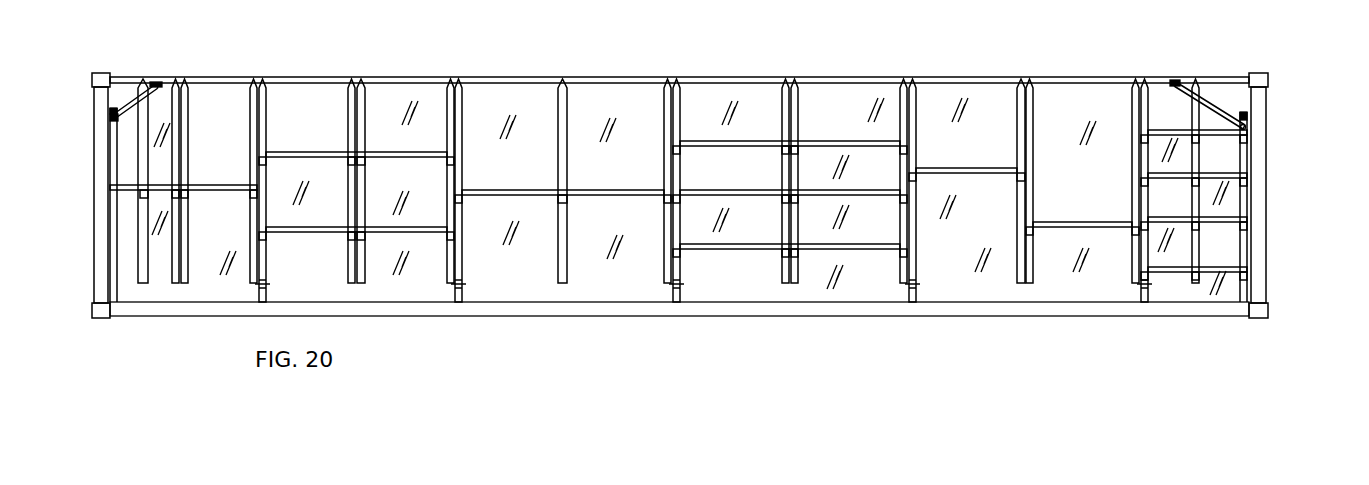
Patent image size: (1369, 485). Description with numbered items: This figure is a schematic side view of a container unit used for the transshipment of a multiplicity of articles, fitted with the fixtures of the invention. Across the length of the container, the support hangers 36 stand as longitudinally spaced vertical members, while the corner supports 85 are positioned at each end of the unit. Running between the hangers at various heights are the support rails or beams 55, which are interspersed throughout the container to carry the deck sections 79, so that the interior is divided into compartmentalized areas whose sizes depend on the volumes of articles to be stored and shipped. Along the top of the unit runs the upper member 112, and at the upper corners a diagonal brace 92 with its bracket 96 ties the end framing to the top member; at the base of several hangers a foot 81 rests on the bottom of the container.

The support hanger 36 is at (187, 152).
The support rail 55 is at (191, 190).
The deck section 79 is at (497, 190).
The foot 81 is at (267, 290).
The corner support 85 is at (112, 157).
The brace 92 is at (128, 98).
The bracket 96 is at (152, 84).
The top rail 112 is at (587, 77).